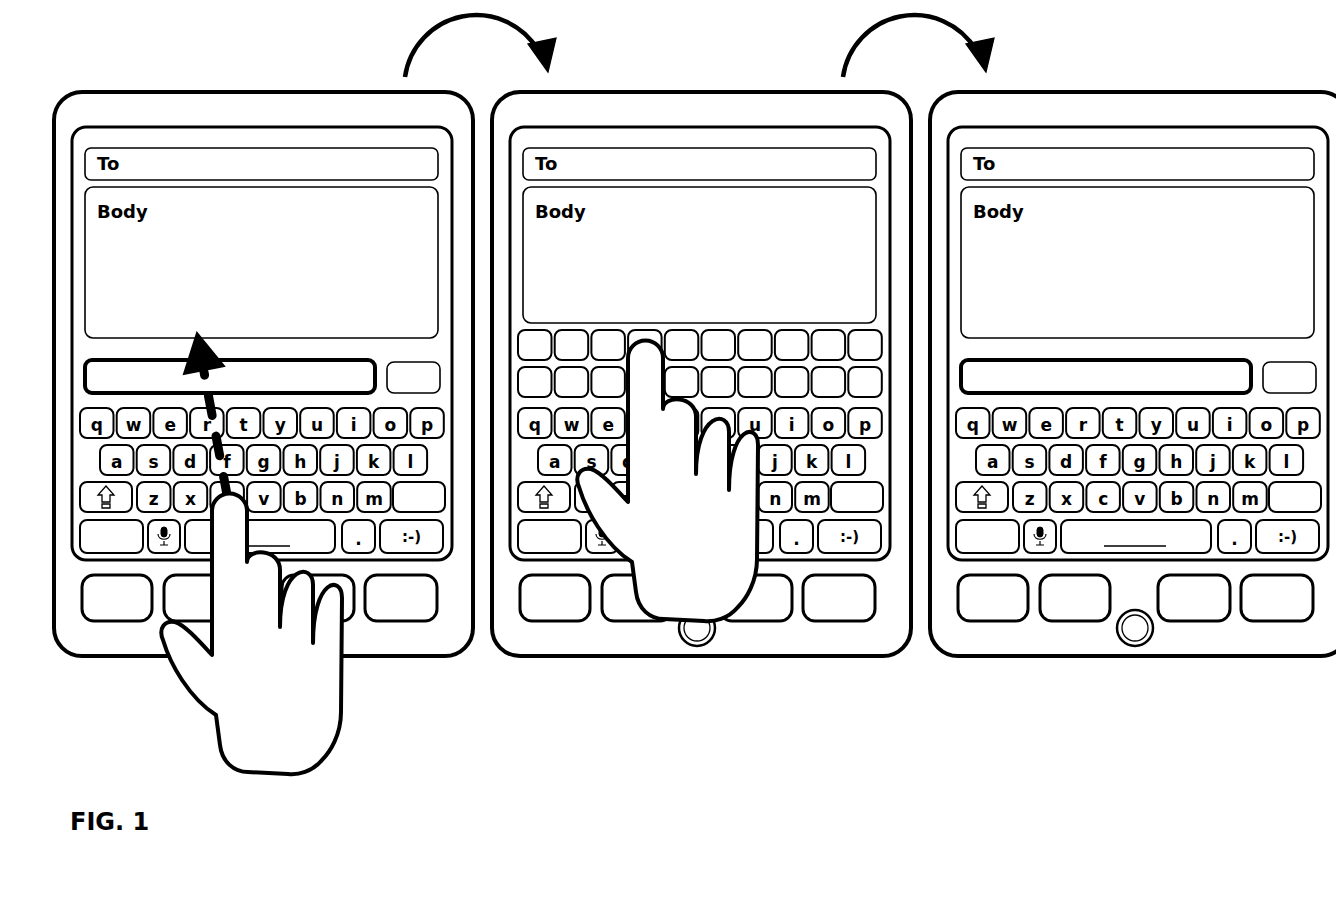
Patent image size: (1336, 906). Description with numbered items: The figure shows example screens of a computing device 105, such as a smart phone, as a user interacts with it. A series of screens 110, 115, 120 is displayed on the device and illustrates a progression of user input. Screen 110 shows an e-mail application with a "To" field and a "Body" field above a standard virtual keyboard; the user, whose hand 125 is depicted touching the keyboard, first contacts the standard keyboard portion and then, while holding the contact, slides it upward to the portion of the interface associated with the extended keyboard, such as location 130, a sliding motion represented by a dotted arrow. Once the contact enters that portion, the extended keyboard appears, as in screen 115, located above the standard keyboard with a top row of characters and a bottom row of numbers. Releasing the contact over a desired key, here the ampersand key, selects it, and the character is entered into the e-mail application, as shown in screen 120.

The computing device 105 is at (150, 91).
The screen 110 is at (275, 126).
The screen 115 is at (633, 126).
The screen 120 is at (1068, 126).
The user's hand / finger 125 is at (337, 743).
The location 130 is at (200, 331).